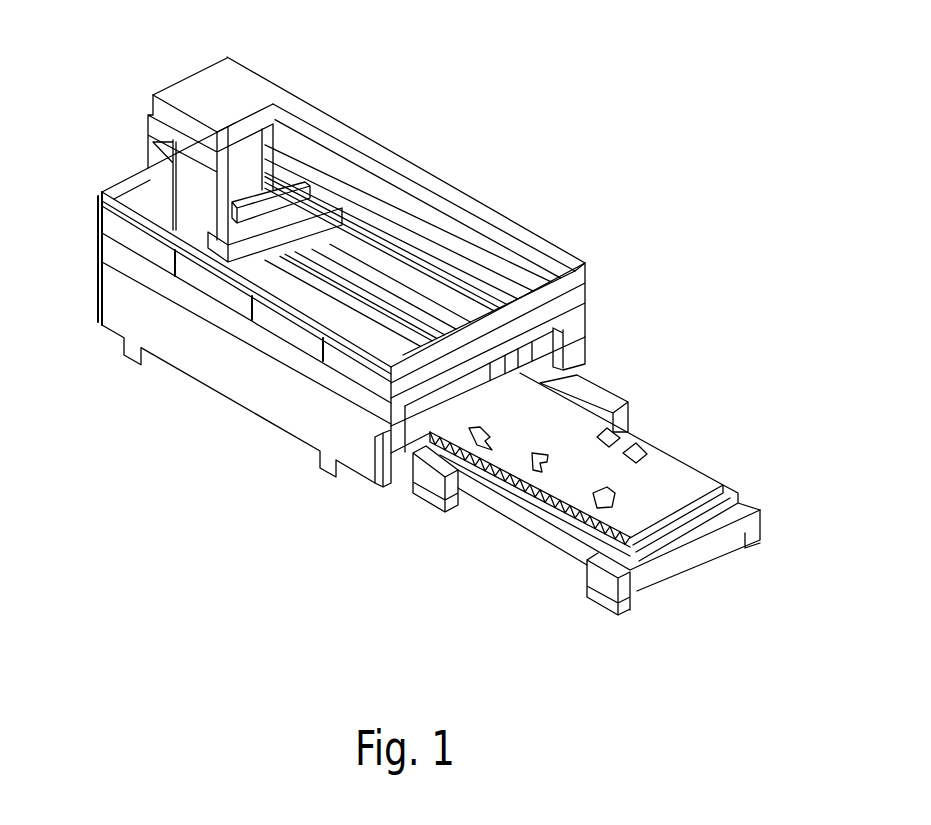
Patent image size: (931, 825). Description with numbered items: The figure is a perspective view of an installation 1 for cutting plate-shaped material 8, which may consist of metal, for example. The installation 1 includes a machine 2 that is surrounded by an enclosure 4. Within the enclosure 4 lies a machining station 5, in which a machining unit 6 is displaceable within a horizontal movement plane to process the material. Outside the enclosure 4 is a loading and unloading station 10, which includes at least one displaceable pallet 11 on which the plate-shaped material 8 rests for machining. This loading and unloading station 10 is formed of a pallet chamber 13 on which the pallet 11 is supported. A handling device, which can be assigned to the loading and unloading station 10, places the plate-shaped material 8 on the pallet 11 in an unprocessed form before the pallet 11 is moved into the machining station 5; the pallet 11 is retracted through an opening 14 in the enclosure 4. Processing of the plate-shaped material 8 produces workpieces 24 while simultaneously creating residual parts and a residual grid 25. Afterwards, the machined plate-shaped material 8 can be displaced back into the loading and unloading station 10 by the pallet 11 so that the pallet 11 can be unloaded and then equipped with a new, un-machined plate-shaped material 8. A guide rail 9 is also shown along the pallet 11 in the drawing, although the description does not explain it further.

The installation 1 is at (436, 344).
The machine 2 is at (405, 131).
The enclosure 4 is at (376, 259).
The machining station 5 is at (320, 298).
The machining unit 6 is at (203, 229).
The plate-shaped material 8 is at (608, 509).
The guide rail 9 is at (607, 533).
The loading and unloading station 10 is at (616, 487).
The pallet 11 is at (518, 502).
The pallet chamber 13 is at (706, 548).
The opening 14 is at (575, 329).
The workpieces 24 is at (637, 449).
The residual grid 25 is at (688, 480).